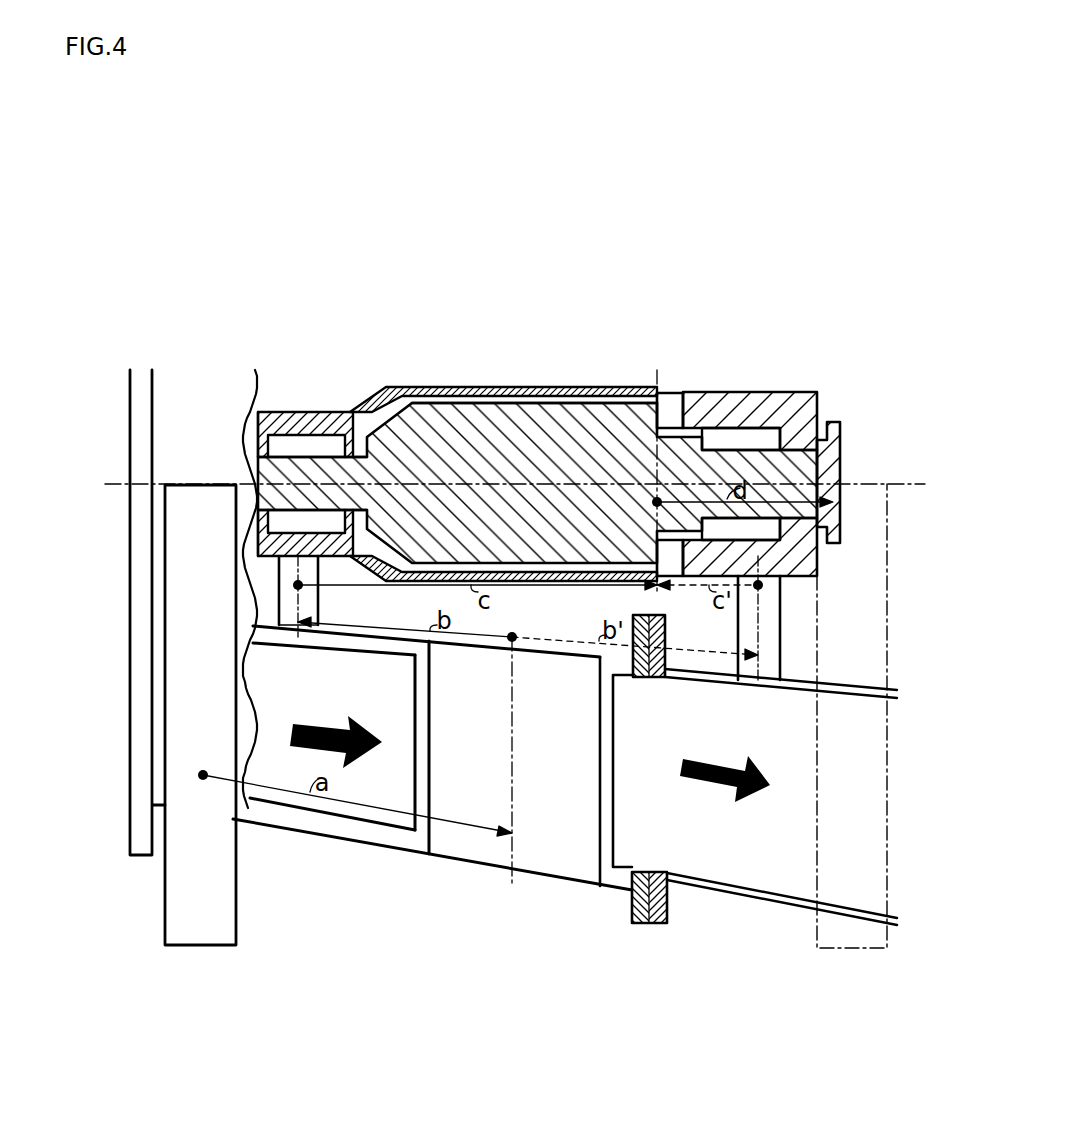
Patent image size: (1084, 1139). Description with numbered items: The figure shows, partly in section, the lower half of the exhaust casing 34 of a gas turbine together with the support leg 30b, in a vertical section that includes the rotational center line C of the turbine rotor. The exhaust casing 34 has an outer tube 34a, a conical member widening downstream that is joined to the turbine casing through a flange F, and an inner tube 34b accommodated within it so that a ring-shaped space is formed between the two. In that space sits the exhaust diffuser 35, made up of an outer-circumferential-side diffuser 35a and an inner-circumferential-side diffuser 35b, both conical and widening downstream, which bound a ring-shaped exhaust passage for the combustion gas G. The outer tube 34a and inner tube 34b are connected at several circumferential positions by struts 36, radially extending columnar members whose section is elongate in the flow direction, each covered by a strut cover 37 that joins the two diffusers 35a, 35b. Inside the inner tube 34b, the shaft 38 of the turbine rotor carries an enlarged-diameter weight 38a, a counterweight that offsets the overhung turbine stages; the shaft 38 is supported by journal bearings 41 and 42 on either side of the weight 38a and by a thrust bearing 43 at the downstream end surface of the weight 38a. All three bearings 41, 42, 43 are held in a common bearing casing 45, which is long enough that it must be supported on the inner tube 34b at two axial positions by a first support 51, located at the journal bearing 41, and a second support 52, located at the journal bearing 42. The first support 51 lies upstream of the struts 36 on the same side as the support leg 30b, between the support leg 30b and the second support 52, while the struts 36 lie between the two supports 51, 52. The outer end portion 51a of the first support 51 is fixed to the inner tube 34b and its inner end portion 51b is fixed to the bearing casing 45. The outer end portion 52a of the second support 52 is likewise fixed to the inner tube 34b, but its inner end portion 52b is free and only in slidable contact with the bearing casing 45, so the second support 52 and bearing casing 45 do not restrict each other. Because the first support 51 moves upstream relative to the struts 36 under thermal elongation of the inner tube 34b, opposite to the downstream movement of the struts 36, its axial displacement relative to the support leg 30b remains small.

The support leg 30b is at (165, 906).
The exhaust casing 34 is at (432, 774).
The outer tube 34a is at (415, 858).
The inner tube 34b is at (489, 650).
The exhaust diffuser 35 is at (332, 760).
The outer-circumferential-side diffuser 35a is at (356, 827).
The inner-circumferential-side diffuser 35b is at (355, 654).
The strut 36 is at (428, 719).
The strut cover 37 is at (415, 774).
The shaft 38 is at (364, 430).
The weight 38a is at (510, 396).
The journal bearing 41 is at (305, 433).
The journal bearing 42 is at (746, 428).
The thrust bearing 43 is at (664, 395).
The bearing casing 45 is at (441, 387).
The first support 51 is at (324, 599).
The end portion of first support on outer circumferential side 51a is at (291, 630).
The end portion of first support on inner circumferential side 51b is at (290, 555).
The second support 52 is at (727, 622).
The end portion of second support on outer circumferential side 52a is at (763, 682).
The end portion of second support on inner circumferential side 52b is at (777, 575).
The flange F is at (130, 755).
The combustion gas G is at (324, 741).
The rotational center line C is at (918, 481).